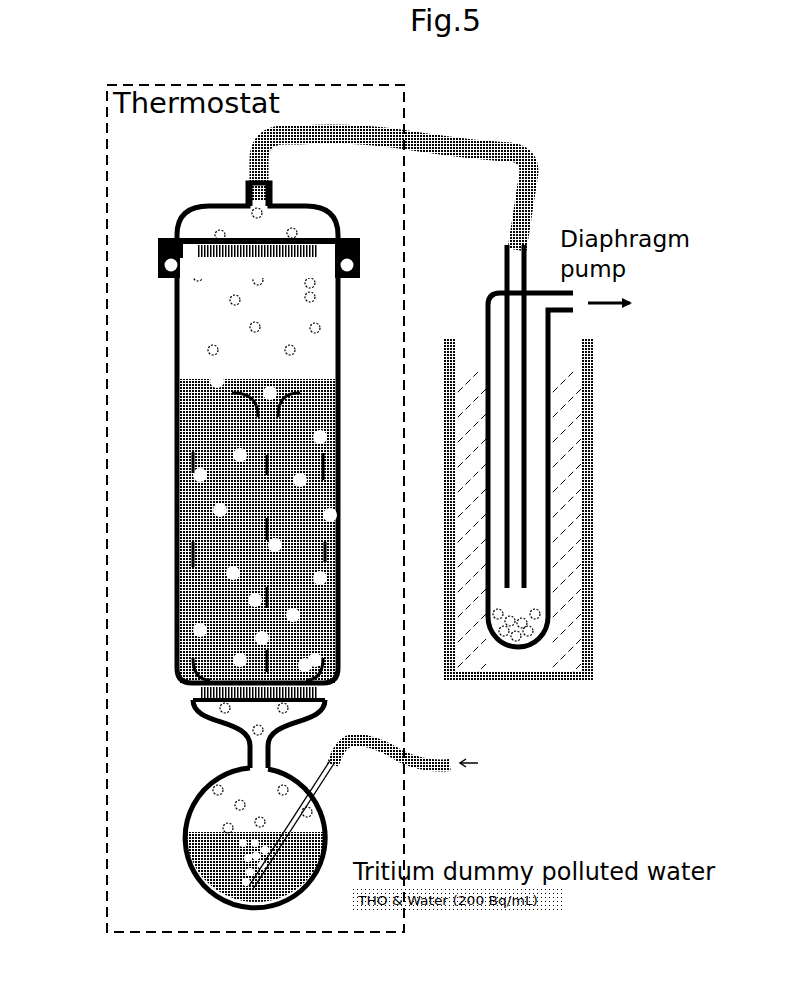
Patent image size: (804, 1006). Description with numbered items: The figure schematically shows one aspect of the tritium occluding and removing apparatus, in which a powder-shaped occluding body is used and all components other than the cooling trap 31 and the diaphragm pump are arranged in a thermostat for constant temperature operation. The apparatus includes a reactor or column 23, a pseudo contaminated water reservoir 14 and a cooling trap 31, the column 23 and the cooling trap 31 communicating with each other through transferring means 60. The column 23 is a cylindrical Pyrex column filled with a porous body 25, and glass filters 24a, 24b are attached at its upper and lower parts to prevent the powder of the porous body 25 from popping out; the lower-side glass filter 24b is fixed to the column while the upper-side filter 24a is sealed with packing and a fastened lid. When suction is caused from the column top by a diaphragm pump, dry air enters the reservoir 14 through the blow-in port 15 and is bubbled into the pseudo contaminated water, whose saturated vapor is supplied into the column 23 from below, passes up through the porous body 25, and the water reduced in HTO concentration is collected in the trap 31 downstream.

The pseudo contaminated water reservoir 14 is at (186, 802).
The blow-in port 15 is at (437, 773).
The reactor (column) 23 is at (178, 368).
The upper-side glass filter 24a is at (218, 257).
The lower-side glass filter 24b is at (200, 706).
The porous body 25 is at (177, 522).
The cooling trap 31 is at (552, 479).
The transferring means 60 is at (540, 170).